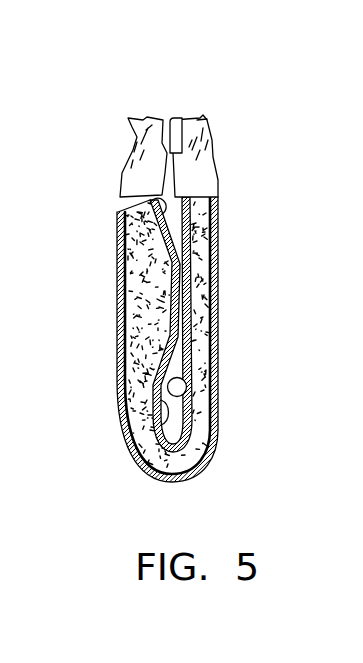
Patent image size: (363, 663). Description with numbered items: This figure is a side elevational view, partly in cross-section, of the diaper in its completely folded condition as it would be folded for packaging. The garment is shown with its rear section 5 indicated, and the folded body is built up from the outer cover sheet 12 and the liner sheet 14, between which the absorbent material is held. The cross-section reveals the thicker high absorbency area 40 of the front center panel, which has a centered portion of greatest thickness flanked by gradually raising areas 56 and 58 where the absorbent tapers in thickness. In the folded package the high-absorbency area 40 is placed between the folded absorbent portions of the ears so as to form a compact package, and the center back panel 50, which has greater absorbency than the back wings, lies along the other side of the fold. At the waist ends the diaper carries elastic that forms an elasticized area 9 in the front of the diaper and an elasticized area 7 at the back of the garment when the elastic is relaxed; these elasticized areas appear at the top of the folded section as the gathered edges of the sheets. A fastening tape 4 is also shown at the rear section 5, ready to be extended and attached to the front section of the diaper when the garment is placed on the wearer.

The fastening tape 4 is at (177, 128).
The rear section 5 is at (256, 191).
The elasticized area 7 is at (197, 120).
The elasticized area 9 is at (157, 120).
The outer cover sheet 12 is at (200, 168).
The liner sheet 14 is at (188, 391).
The high absorbency area 40 is at (123, 292).
The center back panel 50 is at (218, 277).
The gradually raising area 56 is at (148, 194).
The gradually raising area 58 is at (152, 422).